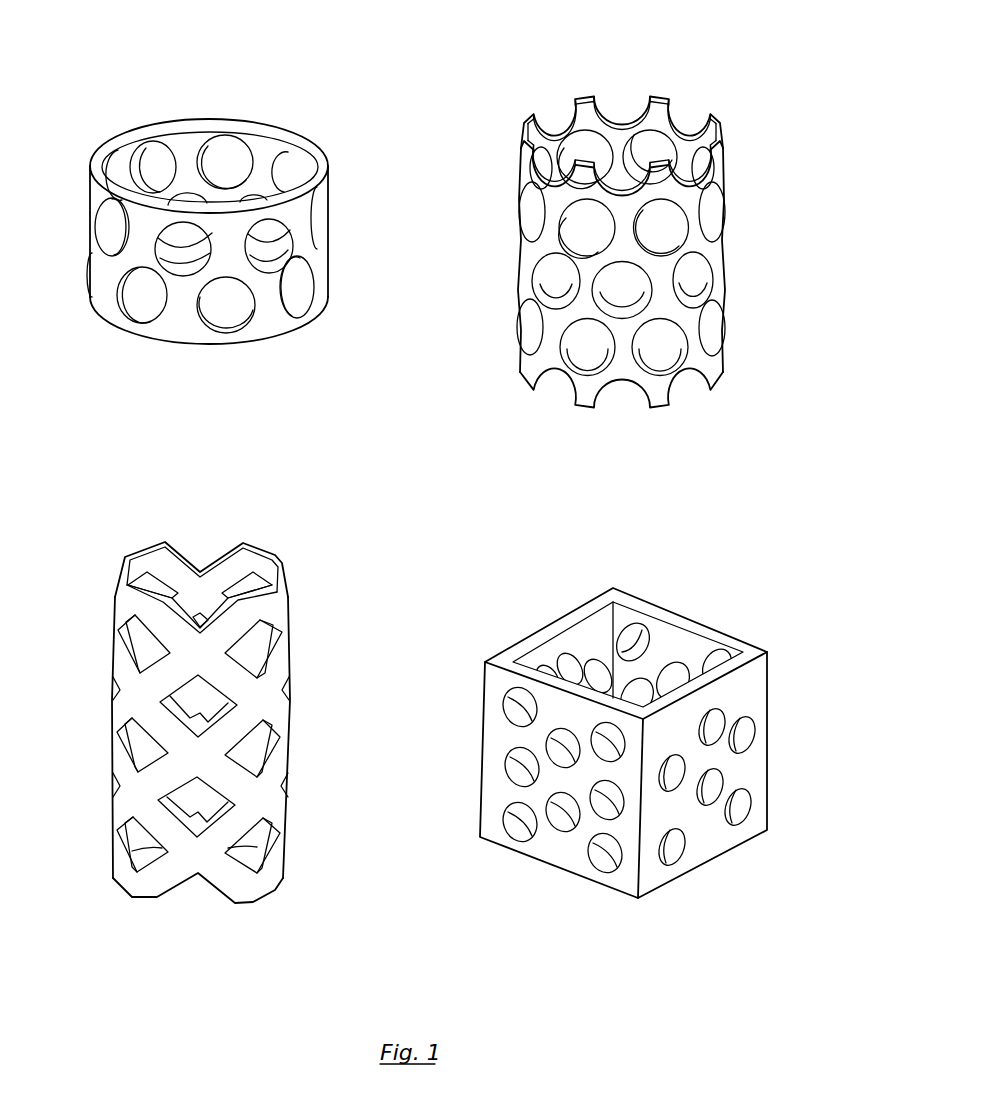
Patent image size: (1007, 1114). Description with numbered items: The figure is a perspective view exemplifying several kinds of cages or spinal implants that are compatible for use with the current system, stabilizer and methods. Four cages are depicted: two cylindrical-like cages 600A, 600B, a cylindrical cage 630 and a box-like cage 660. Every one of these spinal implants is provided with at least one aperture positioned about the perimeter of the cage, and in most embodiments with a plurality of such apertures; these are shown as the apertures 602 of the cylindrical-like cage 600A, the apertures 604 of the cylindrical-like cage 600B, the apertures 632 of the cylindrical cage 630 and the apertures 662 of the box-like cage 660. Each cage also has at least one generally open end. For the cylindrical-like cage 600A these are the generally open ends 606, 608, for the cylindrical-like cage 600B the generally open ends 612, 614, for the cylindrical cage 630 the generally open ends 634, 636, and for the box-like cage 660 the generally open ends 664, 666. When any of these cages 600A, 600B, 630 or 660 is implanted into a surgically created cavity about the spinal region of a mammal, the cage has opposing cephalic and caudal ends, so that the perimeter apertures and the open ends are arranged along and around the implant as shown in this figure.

The cylindrical cage 630 is at (226, 211).
The aperture 632 is at (175, 229).
The generally open end 634 is at (209, 264).
The generally open end 636 is at (210, 109).
The cylindrical-like cage 600B is at (667, 243).
The aperture 604 is at (615, 237).
The generally open end 612 is at (621, 310).
The generally open end 614 is at (622, 105).
The cylindrical-like cage 600A is at (225, 740).
The aperture 602 is at (202, 744).
The generally open end 606 is at (186, 787).
The generally open end 608 is at (213, 568).
The box-like cage 660 is at (642, 732).
The aperture 662 is at (642, 805).
The generally open end 664 is at (643, 767).
The generally open end 666 is at (624, 620).